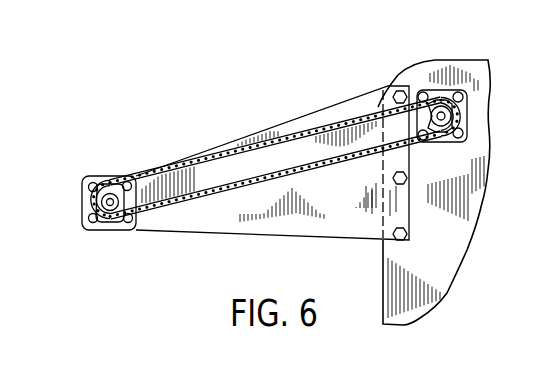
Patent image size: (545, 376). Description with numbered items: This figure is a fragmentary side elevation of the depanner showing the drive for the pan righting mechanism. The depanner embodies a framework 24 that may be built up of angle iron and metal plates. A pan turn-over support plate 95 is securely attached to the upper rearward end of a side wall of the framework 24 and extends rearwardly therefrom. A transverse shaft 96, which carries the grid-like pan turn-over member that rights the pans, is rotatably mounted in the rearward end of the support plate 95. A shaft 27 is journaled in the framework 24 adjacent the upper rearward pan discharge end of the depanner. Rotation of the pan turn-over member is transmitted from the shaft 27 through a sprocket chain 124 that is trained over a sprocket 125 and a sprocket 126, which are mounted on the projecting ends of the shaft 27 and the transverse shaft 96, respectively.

The framework 24 is at (443, 60).
The shaft 27 is at (437, 117).
The pan turn-over support plate 95 is at (278, 122).
The transverse shaft 96 is at (110, 201).
The sprocket chain 124 is at (217, 158).
The sprocket 125 is at (128, 216).
The sprocket 126 is at (433, 118).